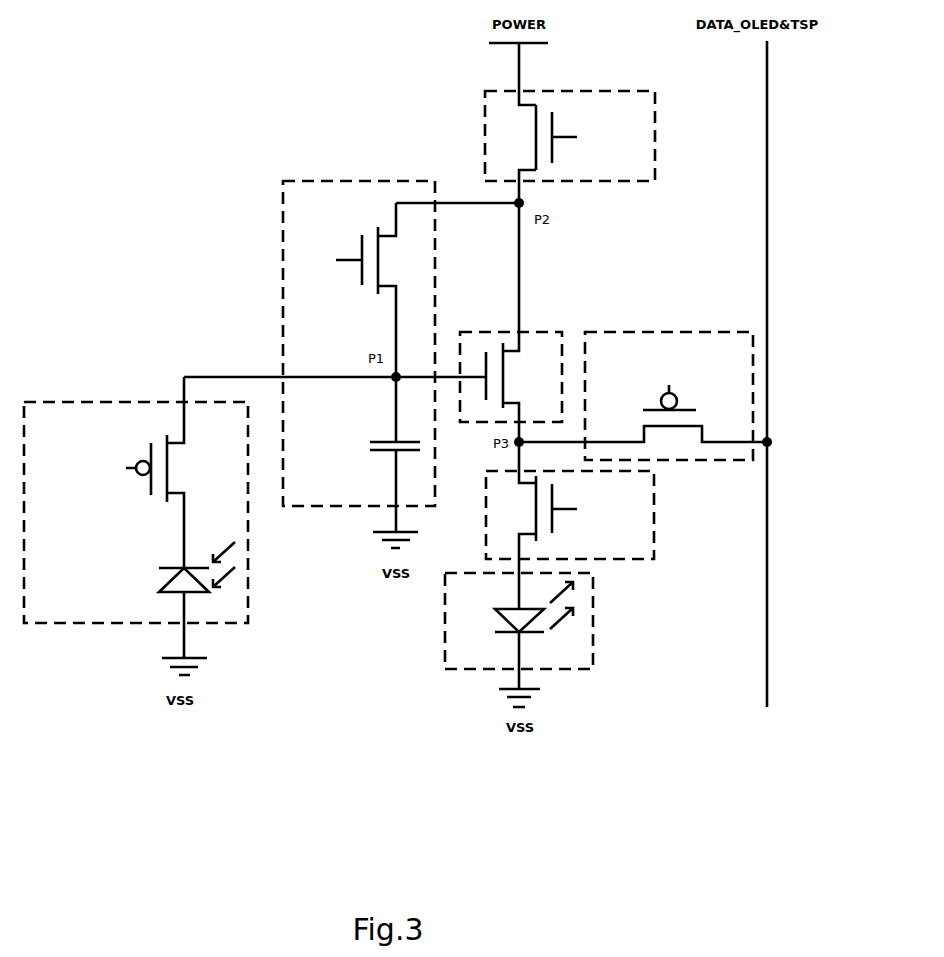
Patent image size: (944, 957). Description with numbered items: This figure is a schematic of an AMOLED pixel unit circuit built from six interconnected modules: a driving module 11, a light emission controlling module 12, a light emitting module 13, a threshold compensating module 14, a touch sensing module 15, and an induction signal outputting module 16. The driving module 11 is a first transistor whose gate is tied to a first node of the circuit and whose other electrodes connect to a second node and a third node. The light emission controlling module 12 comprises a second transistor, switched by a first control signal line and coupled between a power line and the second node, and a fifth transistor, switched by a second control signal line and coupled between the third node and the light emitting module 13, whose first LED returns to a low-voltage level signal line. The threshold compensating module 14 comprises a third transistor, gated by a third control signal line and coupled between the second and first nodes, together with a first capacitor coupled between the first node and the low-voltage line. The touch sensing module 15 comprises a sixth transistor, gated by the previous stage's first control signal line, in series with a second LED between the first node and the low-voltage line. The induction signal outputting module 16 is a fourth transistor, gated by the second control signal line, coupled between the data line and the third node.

The driving module 11 is at (536, 332).
The light emission controlling module 12 is at (568, 91).
The light emitting module 13 is at (443, 620).
The threshold compensating module 14 is at (359, 181).
The touch sensing module 15 is at (95, 402).
The induction signal outputting module 16 is at (668, 332).